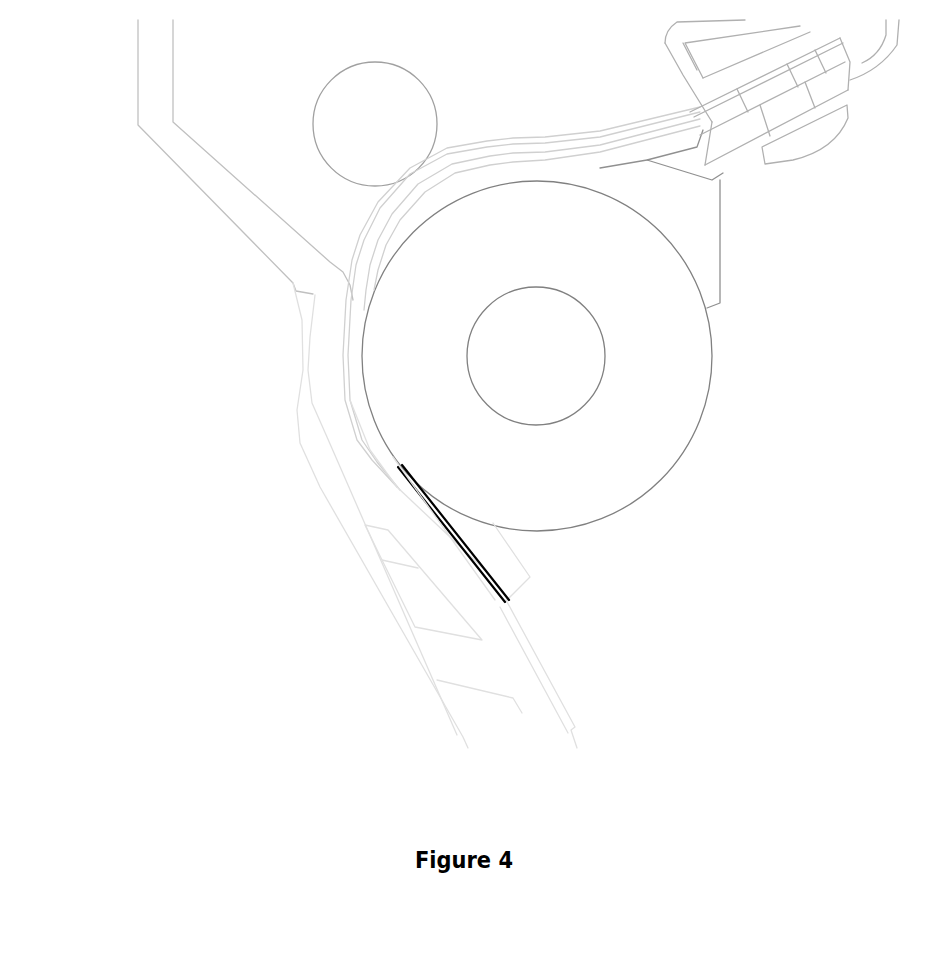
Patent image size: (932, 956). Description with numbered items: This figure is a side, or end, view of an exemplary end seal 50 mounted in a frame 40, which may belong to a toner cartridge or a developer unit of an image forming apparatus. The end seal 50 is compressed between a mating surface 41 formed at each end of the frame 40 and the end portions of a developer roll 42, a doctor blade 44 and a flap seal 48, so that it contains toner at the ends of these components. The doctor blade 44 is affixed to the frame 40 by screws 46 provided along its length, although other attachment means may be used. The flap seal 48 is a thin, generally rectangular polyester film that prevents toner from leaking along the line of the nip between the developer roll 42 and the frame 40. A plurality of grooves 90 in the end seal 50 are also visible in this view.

The frame 40 is at (243, 247).
The mating surface 41 is at (373, 456).
The developer roll 42 is at (630, 500).
The doctor blade 44 is at (603, 170).
The screws 46 is at (793, 160).
The flap seal 48 is at (485, 570).
The end seal 50 is at (343, 397).
The grooves 90 is at (410, 235).